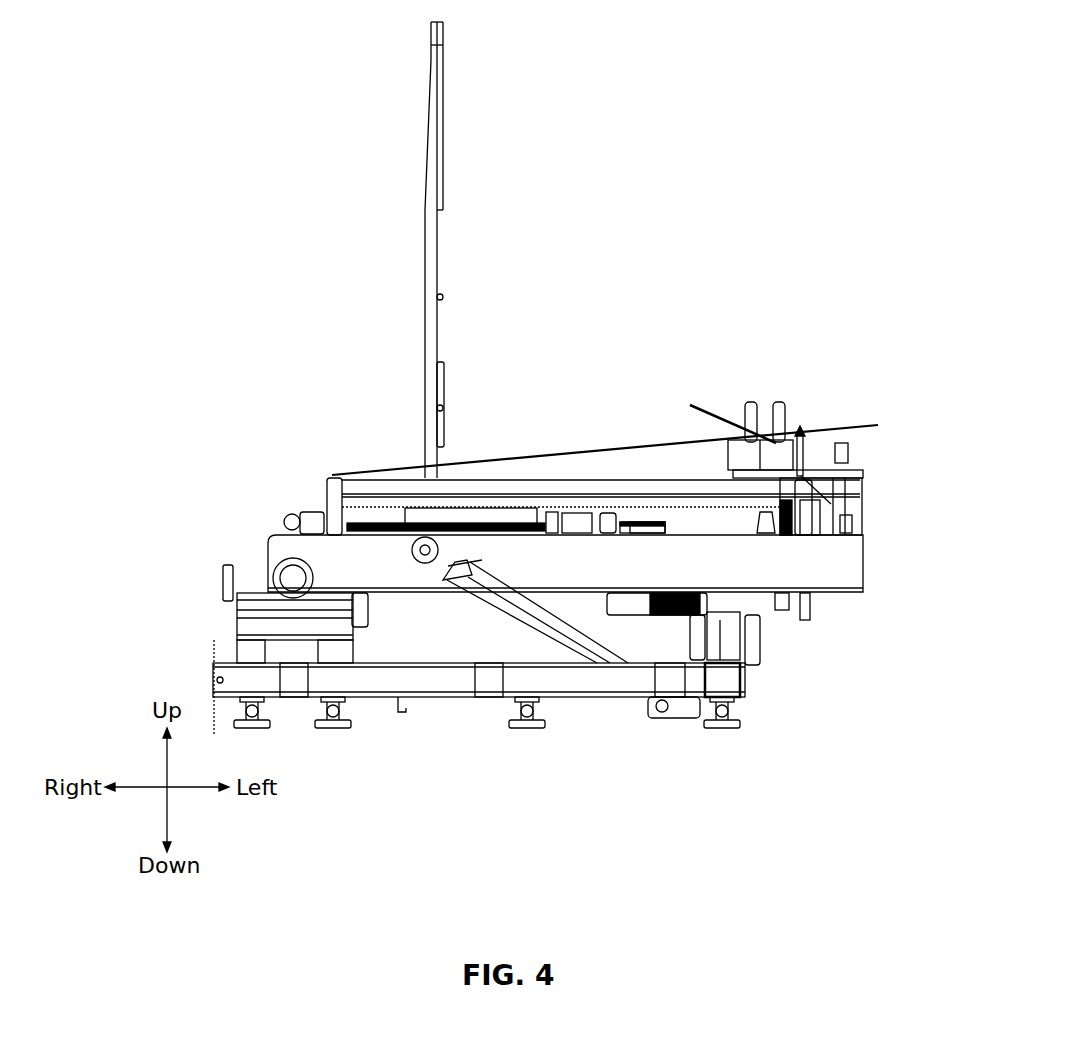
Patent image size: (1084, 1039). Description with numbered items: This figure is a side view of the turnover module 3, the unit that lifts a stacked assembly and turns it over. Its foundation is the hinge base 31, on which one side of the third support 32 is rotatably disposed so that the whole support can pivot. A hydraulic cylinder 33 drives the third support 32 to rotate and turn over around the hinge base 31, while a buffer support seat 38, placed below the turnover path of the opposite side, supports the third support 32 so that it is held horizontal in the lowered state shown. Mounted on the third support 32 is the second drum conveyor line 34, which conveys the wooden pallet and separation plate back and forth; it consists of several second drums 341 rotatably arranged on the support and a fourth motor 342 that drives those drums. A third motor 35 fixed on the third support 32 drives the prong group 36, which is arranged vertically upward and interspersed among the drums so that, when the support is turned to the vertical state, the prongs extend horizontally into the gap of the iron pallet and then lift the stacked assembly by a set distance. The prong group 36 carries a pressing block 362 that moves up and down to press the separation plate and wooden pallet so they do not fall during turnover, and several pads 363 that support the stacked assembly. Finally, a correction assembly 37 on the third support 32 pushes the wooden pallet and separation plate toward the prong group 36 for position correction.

The turnover module 3 is at (720, 128).
The hinge base 31 is at (263, 556).
The third support 32 is at (850, 566).
The hydraulic cylinder 33 is at (519, 613).
The second drum conveyor line 34 is at (722, 497).
The second drums 341 is at (371, 488).
The fourth motor 342 is at (636, 603).
The third motor 35 is at (651, 520).
The prong group 36 is at (433, 250).
The pressing block 362 is at (438, 412).
The pads 363 is at (441, 160).
The correction assembly 37 is at (813, 452).
The buffer support seat 38 is at (720, 602).